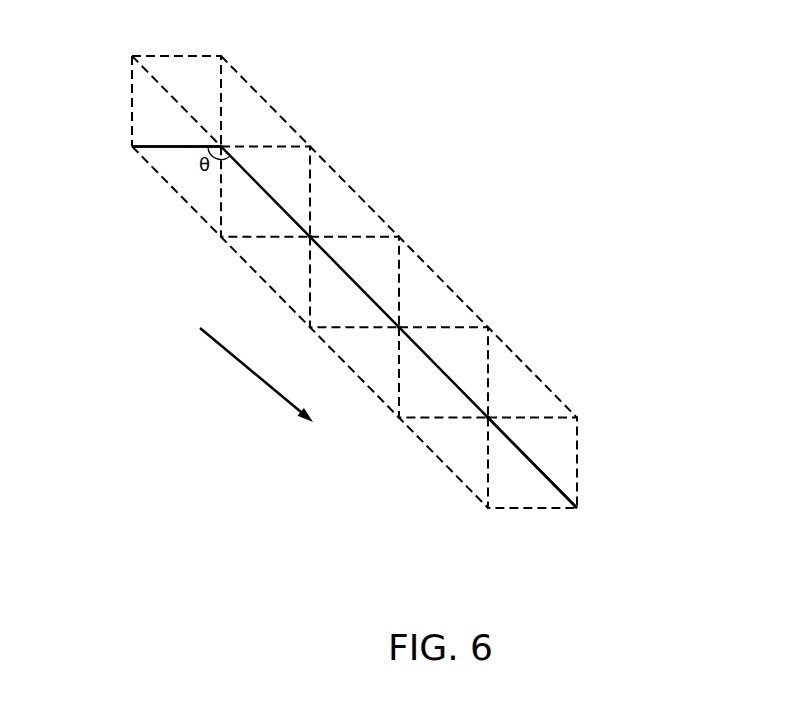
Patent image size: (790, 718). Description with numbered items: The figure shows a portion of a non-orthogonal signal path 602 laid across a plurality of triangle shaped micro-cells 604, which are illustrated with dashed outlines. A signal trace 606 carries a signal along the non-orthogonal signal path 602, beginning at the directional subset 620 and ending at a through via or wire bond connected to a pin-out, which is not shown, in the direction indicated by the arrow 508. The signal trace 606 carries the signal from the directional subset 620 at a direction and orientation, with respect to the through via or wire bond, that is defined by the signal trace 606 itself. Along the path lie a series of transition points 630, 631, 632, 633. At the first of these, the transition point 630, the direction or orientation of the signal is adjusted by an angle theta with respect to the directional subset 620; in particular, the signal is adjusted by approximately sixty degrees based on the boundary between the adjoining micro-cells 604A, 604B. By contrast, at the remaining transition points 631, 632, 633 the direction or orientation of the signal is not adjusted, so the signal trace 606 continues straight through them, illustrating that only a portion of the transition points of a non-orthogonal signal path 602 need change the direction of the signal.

The arrow 508 is at (247, 367).
The non-orthogonal signal path 602 is at (106, 130).
The triangle shaped micro-cell 604 is at (172, 77).
The micro-cell 604A is at (193, 210).
The micro-cell 604B is at (287, 162).
The signal trace 606 is at (540, 475).
The directional subset 620 is at (163, 150).
The transition point 630 is at (222, 147).
The transition point 631 is at (310, 237).
The transition point 632 is at (398, 327).
The transition point 633 is at (488, 418).